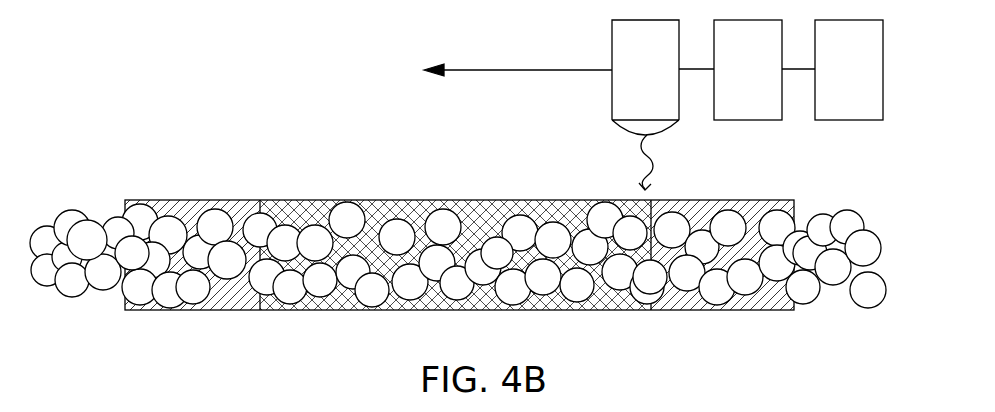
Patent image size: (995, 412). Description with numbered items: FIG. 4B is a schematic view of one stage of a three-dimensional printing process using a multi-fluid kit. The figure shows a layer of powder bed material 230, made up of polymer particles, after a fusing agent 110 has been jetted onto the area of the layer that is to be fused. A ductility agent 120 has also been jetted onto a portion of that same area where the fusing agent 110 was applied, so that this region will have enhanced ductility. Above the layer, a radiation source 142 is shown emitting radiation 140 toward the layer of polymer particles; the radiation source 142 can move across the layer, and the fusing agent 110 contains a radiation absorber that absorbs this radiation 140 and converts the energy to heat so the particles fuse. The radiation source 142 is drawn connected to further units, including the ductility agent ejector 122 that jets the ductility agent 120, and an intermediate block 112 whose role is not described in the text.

The fusing agent 110 is at (248, 210).
The ductility agent 120 is at (357, 220).
The powder bed material 230 is at (73, 218).
The radiation 140 is at (640, 181).
The radiation source 142 is at (666, 79).
The controller 112 is at (768, 79).
The ductility agent ejector 122 is at (869, 79).